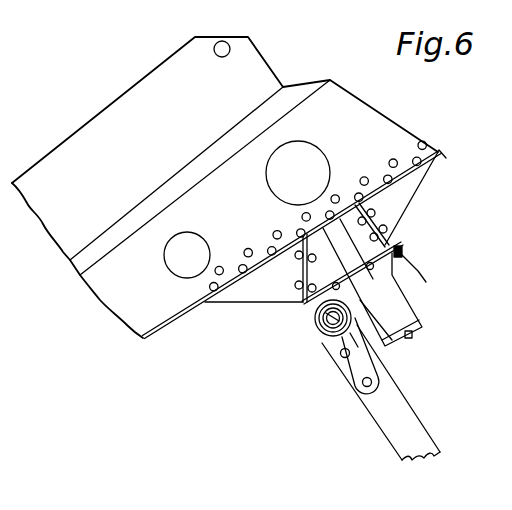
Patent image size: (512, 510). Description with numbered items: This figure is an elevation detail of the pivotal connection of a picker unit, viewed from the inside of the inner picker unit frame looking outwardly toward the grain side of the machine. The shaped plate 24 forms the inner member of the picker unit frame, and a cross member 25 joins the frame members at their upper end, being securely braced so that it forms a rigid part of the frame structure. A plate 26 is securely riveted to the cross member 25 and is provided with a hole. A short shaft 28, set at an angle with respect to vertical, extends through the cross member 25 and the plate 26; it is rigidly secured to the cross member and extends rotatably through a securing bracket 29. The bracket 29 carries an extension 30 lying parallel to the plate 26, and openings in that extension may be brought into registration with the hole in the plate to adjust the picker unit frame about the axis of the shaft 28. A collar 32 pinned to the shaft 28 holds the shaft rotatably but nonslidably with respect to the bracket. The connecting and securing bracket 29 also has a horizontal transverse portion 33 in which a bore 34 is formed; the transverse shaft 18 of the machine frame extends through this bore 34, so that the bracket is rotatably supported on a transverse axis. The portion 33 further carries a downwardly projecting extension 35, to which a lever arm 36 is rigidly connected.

The shaped plate 24 is at (378, 118).
The cross member 25 is at (334, 227).
The short shaft 28 is at (349, 247).
The plate 26 is at (402, 249).
The extension 30 is at (404, 253).
The securing bracket 29 is at (408, 307).
The collar 32 is at (423, 330).
The horizontal transverse portion 33 is at (325, 313).
The transverse shaft 18 is at (333, 332).
The bore 34 is at (353, 350).
The downwardly projecting extension 35 is at (374, 357).
The lever arm 36 is at (410, 423).